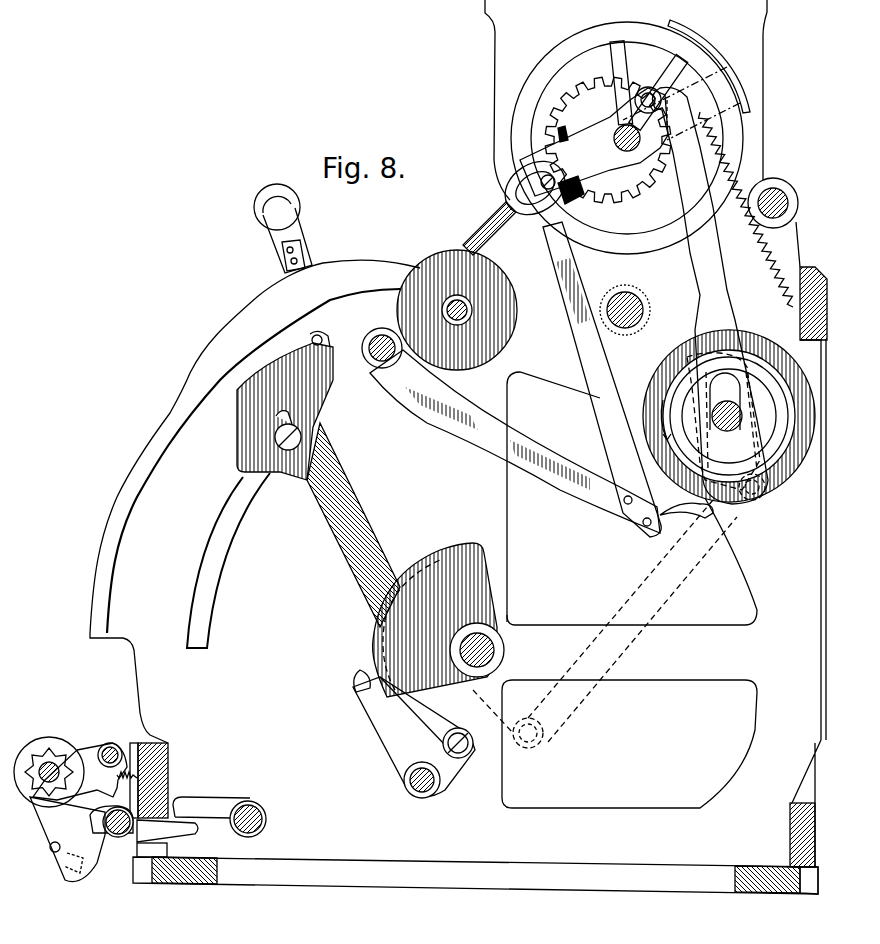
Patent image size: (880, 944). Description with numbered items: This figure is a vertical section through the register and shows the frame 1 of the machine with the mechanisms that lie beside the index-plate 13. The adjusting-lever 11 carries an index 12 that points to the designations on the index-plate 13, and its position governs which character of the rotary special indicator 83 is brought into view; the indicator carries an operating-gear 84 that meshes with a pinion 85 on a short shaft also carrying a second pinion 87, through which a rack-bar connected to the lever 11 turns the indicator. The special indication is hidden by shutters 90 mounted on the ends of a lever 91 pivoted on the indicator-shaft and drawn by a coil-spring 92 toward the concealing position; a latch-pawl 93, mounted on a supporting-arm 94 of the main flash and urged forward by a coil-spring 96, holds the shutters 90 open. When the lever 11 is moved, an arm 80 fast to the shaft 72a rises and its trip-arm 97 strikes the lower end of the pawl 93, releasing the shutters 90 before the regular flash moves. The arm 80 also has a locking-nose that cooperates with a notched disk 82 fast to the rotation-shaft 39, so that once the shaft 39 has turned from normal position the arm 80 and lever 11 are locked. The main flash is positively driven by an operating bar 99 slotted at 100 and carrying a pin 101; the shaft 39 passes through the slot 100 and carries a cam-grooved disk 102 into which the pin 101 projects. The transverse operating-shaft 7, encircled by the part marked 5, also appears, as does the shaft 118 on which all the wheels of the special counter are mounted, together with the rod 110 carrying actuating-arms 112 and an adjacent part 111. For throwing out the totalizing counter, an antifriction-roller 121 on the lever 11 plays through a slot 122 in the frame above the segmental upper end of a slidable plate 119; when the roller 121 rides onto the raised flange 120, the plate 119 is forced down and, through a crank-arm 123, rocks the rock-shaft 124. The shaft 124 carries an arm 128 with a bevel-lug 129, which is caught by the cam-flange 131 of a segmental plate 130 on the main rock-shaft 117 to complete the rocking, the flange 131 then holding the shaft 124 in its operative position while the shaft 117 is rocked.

The frame 1 is at (458, 447).
The bearing 5 is at (630, 296).
The transverse operating-shaft 7 is at (640, 306).
The adjusting-lever 11 is at (300, 243).
The index 12 is at (282, 265).
The index-plate 13 is at (248, 301).
The rotation-shaft 39 is at (727, 425).
The shaft 72a is at (372, 338).
The arm 80 is at (478, 442).
The notched disk 82 is at (682, 347).
The special indicator 83 is at (590, 40).
The operating-gear 84 is at (607, 139).
The pinion 85 is at (538, 143).
The pinion 87 is at (714, 511).
The shutters 90 is at (700, 48).
The lever 91 is at (681, 103).
The coil-spring 92 is at (756, 222).
The latch-pawl 93 is at (510, 168).
The supporting-arm 94 is at (594, 142).
The coil-spring 96 is at (578, 195).
The trip-arm 97 is at (602, 379).
The operating bar 99 is at (718, 272).
The slot 100 is at (723, 417).
The pin 101 is at (770, 490).
The cam-grooved disk 102 is at (662, 388).
The rod 110 is at (266, 815).
The arm 111 is at (218, 787).
The actuating-arm 112 is at (190, 833).
The main rock-shaft 117 is at (495, 645).
The shaft 118 is at (50, 768).
The slidable plate 119 is at (327, 449).
The raised flange 120 is at (238, 436).
The antifriction-roller 121 is at (311, 337).
The slot 122 is at (238, 456).
The crank-arm 123 is at (445, 765).
The rock-shaft 124 is at (430, 792).
The arm 128 is at (385, 740).
The bevel-lug 129 is at (362, 680).
The segmental plate 130 is at (372, 625).
The cam-flange 131 is at (380, 650).